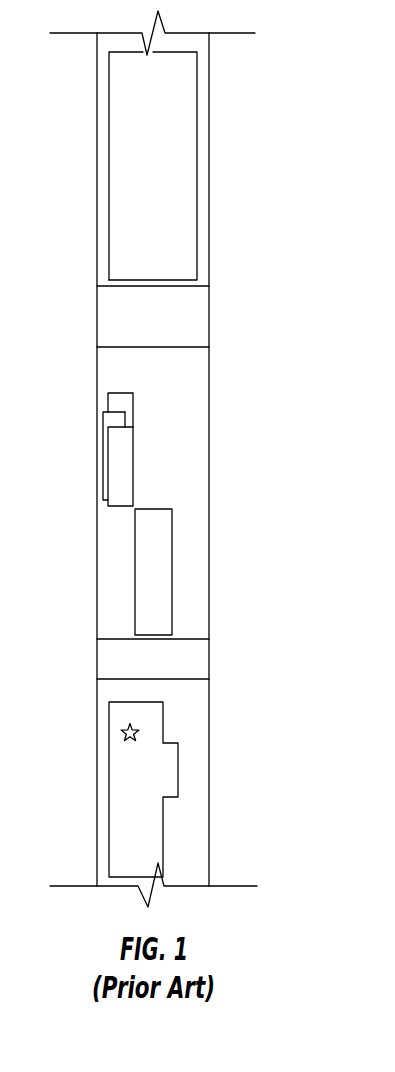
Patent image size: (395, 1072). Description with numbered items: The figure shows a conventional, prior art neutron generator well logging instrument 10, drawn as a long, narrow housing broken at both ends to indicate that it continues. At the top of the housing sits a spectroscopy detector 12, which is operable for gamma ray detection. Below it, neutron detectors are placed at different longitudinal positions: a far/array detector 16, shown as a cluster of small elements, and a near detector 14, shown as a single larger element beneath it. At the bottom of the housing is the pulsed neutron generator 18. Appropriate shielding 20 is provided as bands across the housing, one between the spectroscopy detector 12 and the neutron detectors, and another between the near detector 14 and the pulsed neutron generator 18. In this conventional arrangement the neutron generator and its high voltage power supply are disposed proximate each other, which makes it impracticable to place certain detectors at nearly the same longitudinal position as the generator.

The instrument 10 is at (246, 63).
The spectroscopy detector 12 is at (187, 241).
The near neutron detector 14 is at (160, 572).
The far/array neutron detector 16 is at (123, 452).
The pulsed neutron generator 18 is at (150, 832).
The shielding 20 is at (198, 317).